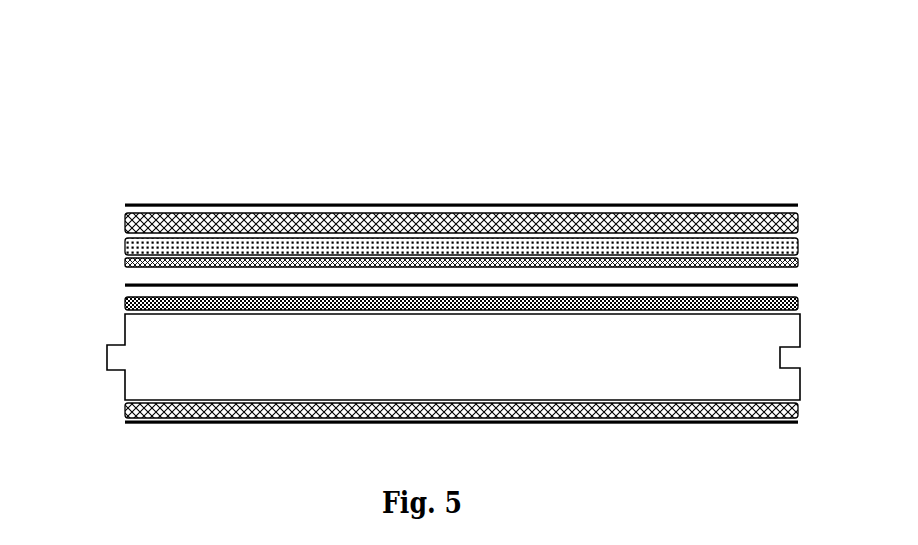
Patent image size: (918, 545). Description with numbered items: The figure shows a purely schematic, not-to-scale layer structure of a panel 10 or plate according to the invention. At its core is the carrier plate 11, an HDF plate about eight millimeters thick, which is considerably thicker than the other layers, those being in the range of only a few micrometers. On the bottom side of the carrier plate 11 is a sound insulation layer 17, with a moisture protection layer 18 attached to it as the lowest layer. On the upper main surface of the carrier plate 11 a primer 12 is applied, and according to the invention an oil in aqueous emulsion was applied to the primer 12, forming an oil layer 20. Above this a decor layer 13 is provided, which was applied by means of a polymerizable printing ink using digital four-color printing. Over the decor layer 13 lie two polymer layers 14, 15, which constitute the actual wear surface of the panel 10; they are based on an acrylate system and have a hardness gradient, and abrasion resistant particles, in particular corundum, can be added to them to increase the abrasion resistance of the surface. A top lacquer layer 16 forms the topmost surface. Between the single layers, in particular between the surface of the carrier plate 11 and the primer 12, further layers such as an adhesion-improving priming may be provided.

The panel 10 is at (244, 140).
The carrier plate 11 is at (143, 337).
The primer 12 is at (800, 302).
The decor layer 13 is at (797, 262).
The polymer layer 14 is at (123, 243).
The polymer layer 15 is at (787, 226).
The top lacquer layer 16 is at (600, 204).
The sound insulation layer 17 is at (800, 410).
The moisture protection layer 18 is at (780, 425).
The oil layer 20 is at (123, 283).